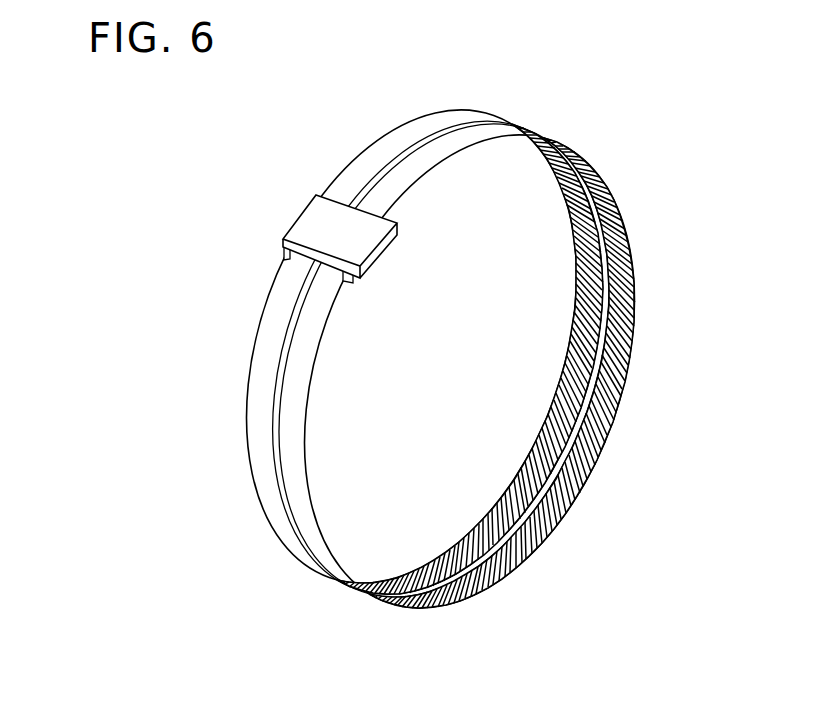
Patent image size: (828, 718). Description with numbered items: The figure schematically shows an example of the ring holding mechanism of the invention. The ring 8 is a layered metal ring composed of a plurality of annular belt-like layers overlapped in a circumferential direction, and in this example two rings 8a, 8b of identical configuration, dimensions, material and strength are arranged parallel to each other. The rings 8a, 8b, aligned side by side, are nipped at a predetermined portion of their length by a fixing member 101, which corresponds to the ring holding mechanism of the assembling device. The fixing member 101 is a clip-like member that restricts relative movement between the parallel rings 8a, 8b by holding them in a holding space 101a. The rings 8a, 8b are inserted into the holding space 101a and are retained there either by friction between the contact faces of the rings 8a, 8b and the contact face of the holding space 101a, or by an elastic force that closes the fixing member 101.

The ring 8 is at (440, 359).
The ring 8a is at (572, 418).
The ring 8b is at (522, 548).
The fixing member 101 is at (302, 205).
The holding space 101a is at (283, 253).